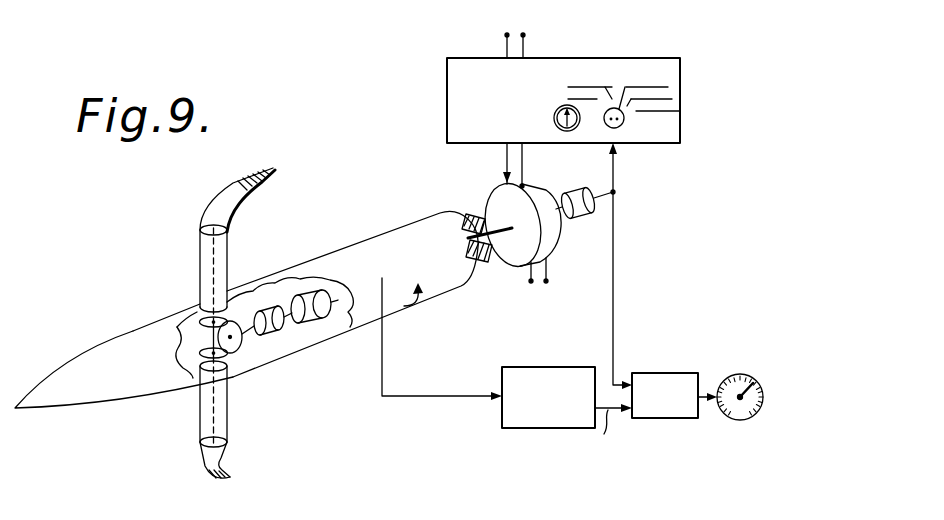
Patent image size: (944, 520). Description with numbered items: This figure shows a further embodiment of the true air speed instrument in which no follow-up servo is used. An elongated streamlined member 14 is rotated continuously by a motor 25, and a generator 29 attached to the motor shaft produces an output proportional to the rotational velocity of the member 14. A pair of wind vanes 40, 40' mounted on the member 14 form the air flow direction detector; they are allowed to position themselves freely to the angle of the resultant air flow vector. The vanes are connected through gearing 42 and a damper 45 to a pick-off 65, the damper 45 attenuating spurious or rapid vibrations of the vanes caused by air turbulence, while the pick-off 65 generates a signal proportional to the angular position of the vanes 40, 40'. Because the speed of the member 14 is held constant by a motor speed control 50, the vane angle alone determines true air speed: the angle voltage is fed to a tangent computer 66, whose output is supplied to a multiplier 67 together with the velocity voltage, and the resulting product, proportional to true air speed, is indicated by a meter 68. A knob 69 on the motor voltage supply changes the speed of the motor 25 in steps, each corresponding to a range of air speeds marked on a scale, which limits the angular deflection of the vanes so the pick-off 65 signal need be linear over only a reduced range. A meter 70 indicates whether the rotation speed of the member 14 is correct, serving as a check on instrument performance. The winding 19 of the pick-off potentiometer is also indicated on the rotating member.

The elongated streamlined member 14 is at (70, 410).
The winding 19 is at (410, 238).
The motor 25 is at (490, 198).
The generator 29 is at (593, 222).
The wind vane 40 is at (246, 243).
The wind vane 40' is at (250, 418).
The gearing 42 is at (231, 351).
The damper 45 is at (278, 338).
The motor speed control 50 is at (641, 58).
The pick-off 65 is at (319, 325).
The tangent computer 66 is at (547, 367).
The multiplier 67 is at (665, 373).
The meter 68 is at (745, 374).
The knob 69 is at (622, 127).
The meter 70 is at (560, 128).